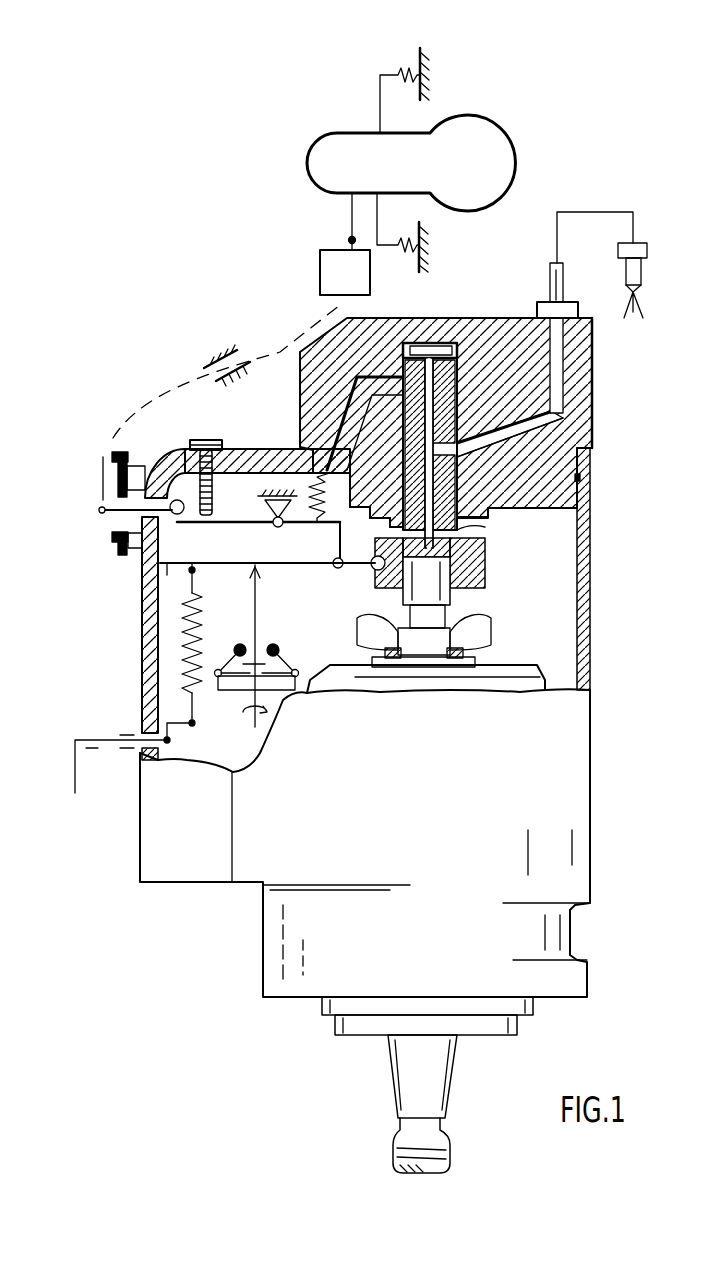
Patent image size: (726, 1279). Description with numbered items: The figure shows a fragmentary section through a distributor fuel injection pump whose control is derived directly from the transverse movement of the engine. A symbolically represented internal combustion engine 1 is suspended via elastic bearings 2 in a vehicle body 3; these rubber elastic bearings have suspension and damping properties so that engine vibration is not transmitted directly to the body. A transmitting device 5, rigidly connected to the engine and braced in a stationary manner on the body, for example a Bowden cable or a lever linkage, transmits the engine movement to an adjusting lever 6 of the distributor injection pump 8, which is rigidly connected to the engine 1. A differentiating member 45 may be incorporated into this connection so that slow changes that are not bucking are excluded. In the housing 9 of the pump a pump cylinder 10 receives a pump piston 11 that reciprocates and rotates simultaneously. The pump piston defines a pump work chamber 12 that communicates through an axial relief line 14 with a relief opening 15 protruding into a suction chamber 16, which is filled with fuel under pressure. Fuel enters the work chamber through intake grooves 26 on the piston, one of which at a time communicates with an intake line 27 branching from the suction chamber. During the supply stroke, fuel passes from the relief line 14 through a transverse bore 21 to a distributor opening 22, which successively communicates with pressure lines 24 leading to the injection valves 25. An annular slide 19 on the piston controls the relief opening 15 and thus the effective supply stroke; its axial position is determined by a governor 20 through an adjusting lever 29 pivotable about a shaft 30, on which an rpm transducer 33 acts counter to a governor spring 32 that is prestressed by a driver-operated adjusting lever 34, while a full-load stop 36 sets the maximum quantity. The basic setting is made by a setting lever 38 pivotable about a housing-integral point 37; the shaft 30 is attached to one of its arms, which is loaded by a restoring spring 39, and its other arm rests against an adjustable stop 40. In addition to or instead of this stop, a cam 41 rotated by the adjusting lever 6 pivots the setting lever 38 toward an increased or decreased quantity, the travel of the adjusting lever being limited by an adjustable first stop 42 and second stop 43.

The internal combustion engine 1 is at (350, 133).
The elastic bearings 2 is at (400, 68).
The vehicle body 3 is at (430, 65).
The transmitting device 5 is at (282, 342).
The adjusting lever 6 is at (102, 512).
The distributor injection pump 8 is at (140, 703).
The housing 9 is at (570, 770).
The pump cylinder 10 is at (463, 318).
The pump piston 11 is at (460, 622).
The pump work chamber 12 is at (433, 343).
The relief line 14 is at (428, 410).
The relief opening 15 is at (460, 532).
The suction chamber 16 is at (570, 585).
The annular slide 19 is at (487, 565).
The governor 20 is at (314, 614).
The transverse bore 21 is at (458, 462).
The distributor opening 22 is at (460, 430).
The pressure lines 24 is at (592, 428).
The injection valves 25 is at (645, 262).
The intake grooves 26 is at (415, 343).
The intake line 27 is at (345, 413).
The adjusting lever 29 is at (340, 568).
The shaft 30 is at (358, 537).
The governor spring 32 is at (185, 648).
The rpm transducer 33 is at (235, 692).
The adjusting lever 34 is at (75, 775).
The full-load stop 36 is at (140, 572).
The pivot point 37 is at (272, 525).
The setting lever 38 is at (235, 513).
The restoring spring 39 is at (293, 447).
The adjustable stop 40 is at (185, 437).
The cam 41 is at (177, 455).
The first stop 42 is at (112, 475).
The second stop 43 is at (112, 540).
The differentiating member 45 is at (332, 258).